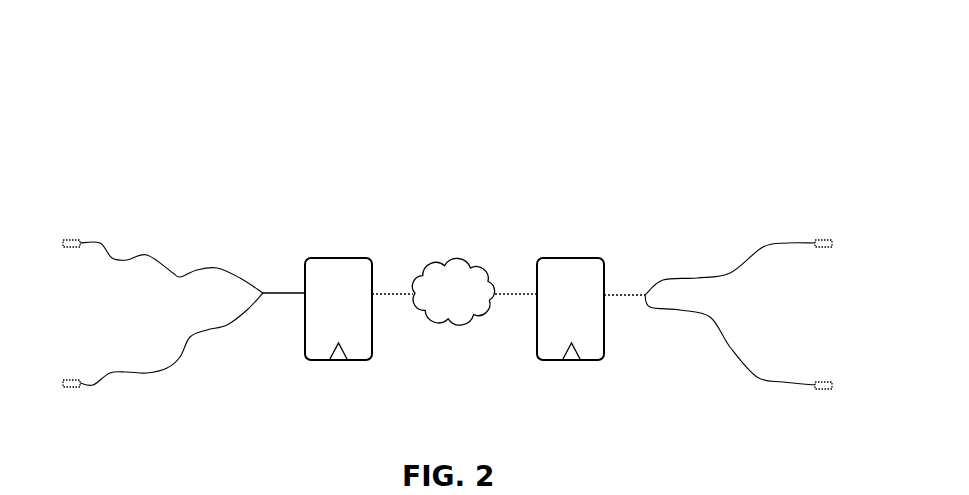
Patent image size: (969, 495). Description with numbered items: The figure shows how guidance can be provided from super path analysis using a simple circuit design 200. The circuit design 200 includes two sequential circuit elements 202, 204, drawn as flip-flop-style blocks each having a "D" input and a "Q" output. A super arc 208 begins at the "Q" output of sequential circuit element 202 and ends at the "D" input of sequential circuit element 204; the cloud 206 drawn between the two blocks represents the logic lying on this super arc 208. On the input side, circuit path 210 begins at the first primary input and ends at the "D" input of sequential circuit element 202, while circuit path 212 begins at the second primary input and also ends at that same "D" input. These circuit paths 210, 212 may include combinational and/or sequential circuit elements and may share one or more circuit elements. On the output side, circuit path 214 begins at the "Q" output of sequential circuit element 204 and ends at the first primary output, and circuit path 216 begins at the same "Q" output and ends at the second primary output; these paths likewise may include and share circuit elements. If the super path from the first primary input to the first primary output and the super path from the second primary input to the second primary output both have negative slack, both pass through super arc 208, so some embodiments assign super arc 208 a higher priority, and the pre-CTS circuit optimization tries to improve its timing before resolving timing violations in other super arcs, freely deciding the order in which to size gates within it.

The circuit design 200 is at (187, 128).
The sequential circuit element 202 is at (338, 309).
The sequential circuit element 204 is at (570, 309).
The combinational logic cloud 206 is at (453, 291).
The super arc 208 is at (455, 241).
The circuit path 210 is at (263, 273).
The circuit path 212 is at (275, 317).
The circuit path 214 is at (795, 218).
The circuit path 216 is at (803, 408).